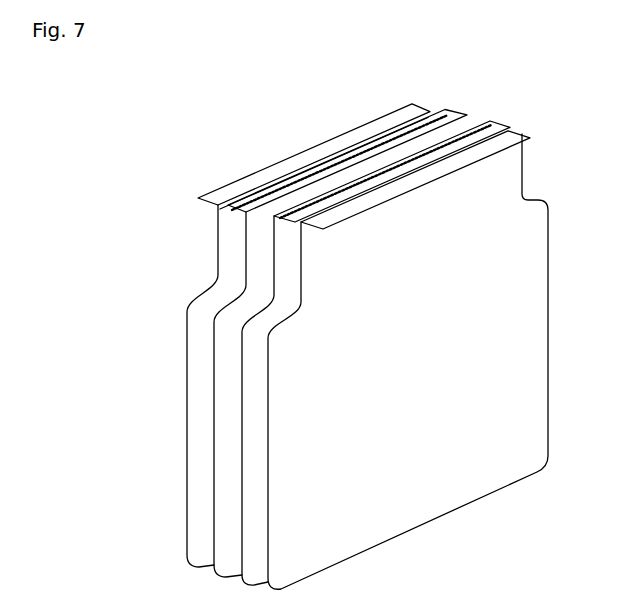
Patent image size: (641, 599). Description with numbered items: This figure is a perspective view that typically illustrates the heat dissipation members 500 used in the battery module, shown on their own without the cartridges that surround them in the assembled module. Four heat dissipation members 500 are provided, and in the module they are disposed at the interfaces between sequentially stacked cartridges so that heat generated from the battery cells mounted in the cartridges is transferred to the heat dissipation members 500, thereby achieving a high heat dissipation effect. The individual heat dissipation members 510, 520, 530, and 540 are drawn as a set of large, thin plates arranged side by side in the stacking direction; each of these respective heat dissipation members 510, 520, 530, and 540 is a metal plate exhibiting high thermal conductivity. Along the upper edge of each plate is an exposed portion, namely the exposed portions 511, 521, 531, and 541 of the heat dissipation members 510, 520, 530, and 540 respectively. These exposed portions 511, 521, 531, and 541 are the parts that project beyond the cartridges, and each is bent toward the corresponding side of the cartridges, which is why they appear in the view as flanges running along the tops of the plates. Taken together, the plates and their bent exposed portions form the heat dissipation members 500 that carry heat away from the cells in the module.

The heat dissipation members 500 is at (330, 320).
The heat dissipation member 510 is at (228, 273).
The exposed portion 511 is at (297, 162).
The heat dissipation member 520 is at (230, 336).
The exposed portion 521 is at (380, 135).
The heat dissipation member 530 is at (250, 403).
The exposed portion 531 is at (522, 138).
The heat dissipation member 540 is at (408, 460).
The exposed portion 541 is at (460, 158).